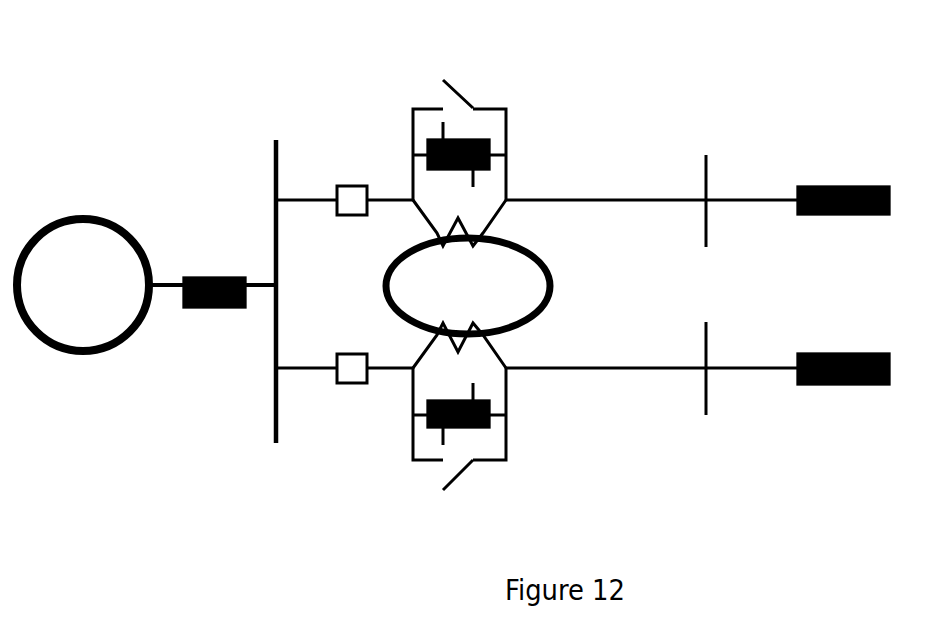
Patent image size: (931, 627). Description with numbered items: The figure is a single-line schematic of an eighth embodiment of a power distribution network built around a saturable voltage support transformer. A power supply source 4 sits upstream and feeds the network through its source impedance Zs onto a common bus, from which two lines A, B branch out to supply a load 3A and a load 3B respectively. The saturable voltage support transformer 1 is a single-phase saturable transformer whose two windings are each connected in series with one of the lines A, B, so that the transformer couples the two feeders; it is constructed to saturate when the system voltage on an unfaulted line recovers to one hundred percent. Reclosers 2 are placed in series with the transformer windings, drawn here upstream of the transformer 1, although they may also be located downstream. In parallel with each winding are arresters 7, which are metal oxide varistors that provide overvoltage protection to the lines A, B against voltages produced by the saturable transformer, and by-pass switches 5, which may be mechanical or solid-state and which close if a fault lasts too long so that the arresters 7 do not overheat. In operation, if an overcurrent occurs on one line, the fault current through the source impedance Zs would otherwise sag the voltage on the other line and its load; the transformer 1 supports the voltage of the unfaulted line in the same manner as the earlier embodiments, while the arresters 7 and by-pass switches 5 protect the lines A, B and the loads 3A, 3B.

The saturable voltage support transformer 1 is at (468, 284).
The recloser 2 is at (348, 172).
The load 3A is at (836, 173).
The load 3B is at (836, 341).
The power supply source 4 is at (100, 285).
The by-pass switch 5 is at (455, 80).
The arrester 7 is at (443, 136).
The source impedance Zs is at (229, 272).
The line A is at (659, 194).
The line B is at (674, 376).